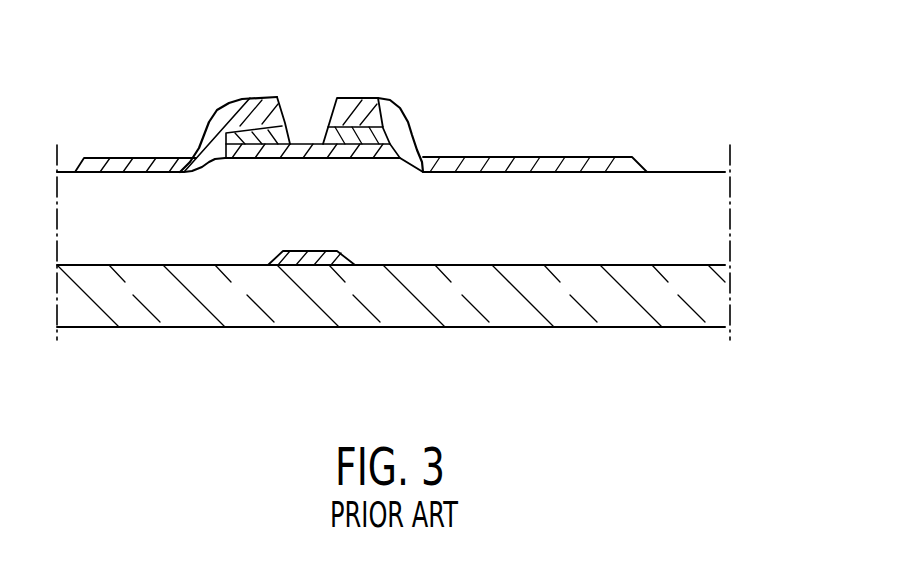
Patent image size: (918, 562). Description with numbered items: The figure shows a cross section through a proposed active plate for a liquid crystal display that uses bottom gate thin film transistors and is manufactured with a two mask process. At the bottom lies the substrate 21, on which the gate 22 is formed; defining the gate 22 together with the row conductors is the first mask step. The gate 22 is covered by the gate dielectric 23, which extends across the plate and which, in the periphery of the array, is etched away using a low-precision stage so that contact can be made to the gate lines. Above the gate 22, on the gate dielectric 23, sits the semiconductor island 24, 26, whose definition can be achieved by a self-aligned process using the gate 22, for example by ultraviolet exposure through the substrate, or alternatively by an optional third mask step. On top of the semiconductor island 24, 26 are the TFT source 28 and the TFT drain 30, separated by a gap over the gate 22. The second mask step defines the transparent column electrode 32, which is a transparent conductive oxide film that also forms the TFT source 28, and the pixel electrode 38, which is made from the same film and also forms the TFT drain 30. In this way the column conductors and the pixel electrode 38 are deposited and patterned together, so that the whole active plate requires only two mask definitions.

The substrate 21 is at (532, 308).
The gate 22 is at (298, 258).
The gate dielectric 23 is at (707, 212).
The semiconductor island 24 is at (410, 136).
The semiconductor island 26 is at (378, 128).
The TFT source 28 is at (256, 97).
The TFT drain 30 is at (350, 107).
The transparent column electrode 32 is at (135, 156).
The pixel electrode 38 is at (588, 157).